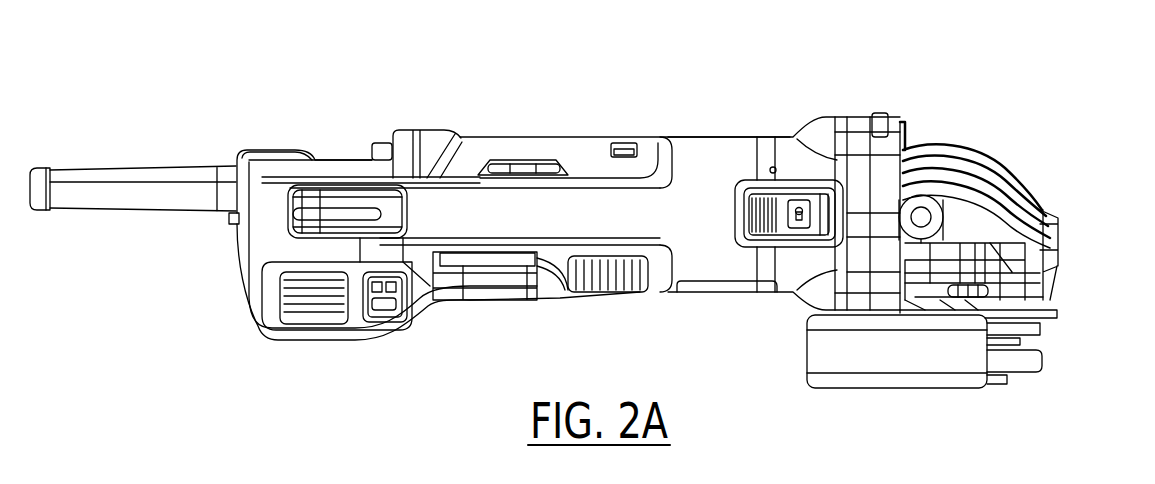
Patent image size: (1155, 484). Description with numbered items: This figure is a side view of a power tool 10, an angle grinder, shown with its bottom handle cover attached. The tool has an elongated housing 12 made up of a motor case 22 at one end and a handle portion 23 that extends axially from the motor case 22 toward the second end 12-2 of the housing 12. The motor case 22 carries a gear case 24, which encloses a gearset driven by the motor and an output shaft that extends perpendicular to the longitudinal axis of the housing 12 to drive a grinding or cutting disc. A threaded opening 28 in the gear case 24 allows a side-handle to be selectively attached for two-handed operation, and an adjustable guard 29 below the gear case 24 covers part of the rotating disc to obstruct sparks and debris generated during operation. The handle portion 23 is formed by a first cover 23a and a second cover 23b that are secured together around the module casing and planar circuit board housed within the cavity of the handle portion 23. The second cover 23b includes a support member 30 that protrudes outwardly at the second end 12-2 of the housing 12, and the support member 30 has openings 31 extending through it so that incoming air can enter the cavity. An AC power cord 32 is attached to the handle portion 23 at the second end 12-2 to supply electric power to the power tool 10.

The power tool 10 is at (896, 45).
The housing 12 is at (633, 101).
The second end of the housing 12-2 is at (237, 148).
The motor case 22 is at (745, 101).
The handle portion 23 is at (447, 104).
The first cover 23a is at (545, 137).
The second cover 23b is at (658, 294).
The gear case 24 is at (1015, 155).
The threaded opening 28 is at (921, 217).
The adjustable guard 29 is at (820, 347).
The support member 30 is at (323, 342).
The openings 31 is at (388, 330).
The AC power cord 32 is at (115, 210).